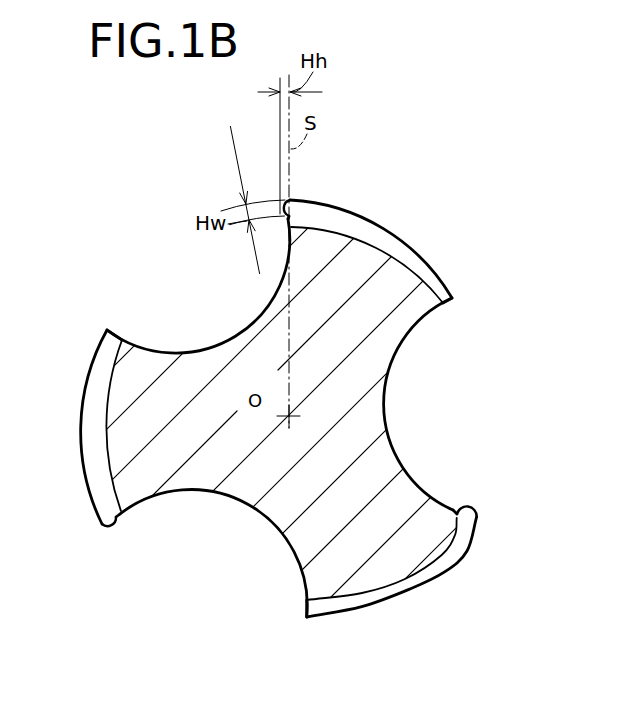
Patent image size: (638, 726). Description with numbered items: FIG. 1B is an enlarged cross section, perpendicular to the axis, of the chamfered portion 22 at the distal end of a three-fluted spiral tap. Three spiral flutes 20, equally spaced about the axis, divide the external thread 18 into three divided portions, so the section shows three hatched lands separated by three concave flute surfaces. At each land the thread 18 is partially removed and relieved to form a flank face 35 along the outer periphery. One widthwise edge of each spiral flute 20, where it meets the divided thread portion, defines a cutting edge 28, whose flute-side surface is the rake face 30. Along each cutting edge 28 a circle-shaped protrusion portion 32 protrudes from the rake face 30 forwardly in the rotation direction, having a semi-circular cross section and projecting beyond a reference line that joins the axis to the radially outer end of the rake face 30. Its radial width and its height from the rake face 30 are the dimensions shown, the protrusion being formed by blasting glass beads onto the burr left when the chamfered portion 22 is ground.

The thread 18 is at (412, 263).
The spiral flute 20 is at (224, 342).
The chamfered portion 22 is at (452, 171).
The cutting edge 28 is at (305, 185).
The rake face 30 is at (288, 228).
The circle-shaped protrusion portion 32 is at (283, 202).
The flank face 35 is at (396, 236).